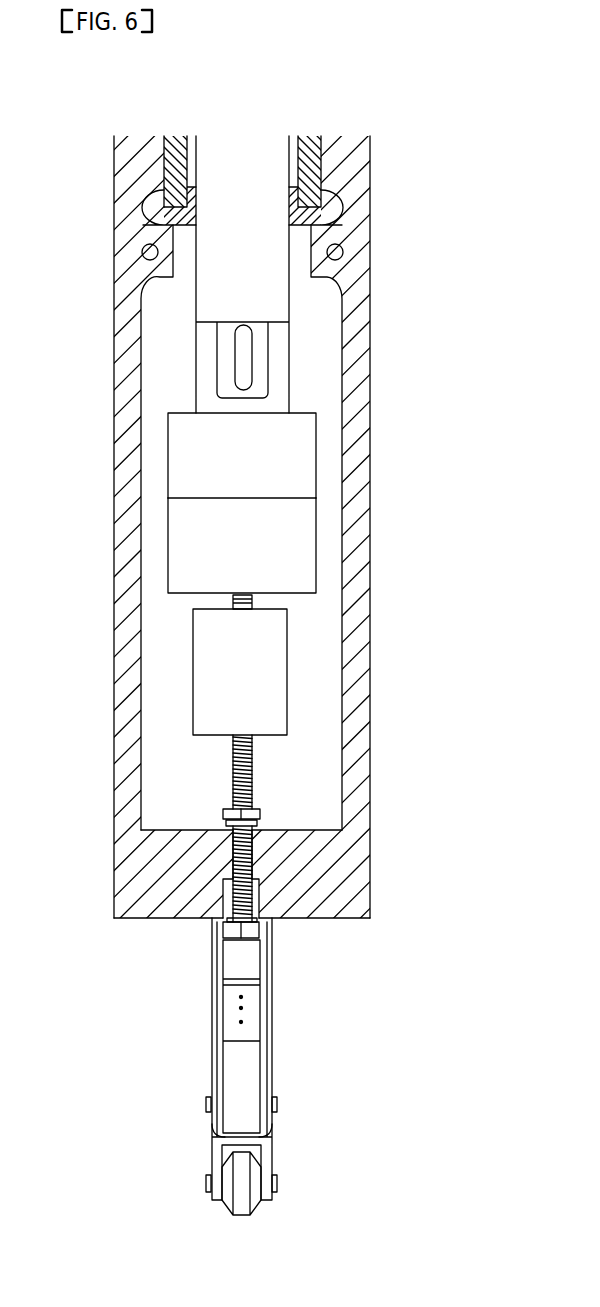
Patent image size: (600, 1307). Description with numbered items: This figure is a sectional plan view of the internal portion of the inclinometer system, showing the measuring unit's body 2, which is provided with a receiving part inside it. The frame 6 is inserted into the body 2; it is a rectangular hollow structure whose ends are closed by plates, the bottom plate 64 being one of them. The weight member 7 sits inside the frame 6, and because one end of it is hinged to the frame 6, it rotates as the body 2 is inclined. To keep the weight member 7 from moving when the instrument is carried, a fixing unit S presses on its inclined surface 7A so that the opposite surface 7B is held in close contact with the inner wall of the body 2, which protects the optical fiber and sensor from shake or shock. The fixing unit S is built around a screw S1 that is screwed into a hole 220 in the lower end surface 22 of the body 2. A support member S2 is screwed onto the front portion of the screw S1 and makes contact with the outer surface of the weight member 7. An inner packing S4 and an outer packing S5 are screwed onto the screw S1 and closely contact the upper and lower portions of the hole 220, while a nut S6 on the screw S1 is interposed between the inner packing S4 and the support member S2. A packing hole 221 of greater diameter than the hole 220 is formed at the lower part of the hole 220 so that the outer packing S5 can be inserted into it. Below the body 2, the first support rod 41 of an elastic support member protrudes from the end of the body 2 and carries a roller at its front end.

The body 2 is at (118, 368).
The lower end surface 22 is at (132, 866).
The frame 6 is at (185, 232).
The bottom plate 64 is at (313, 210).
The weight member 7 is at (270, 468).
The inclined surface 7A is at (242, 537).
The opposite surface 7B is at (167, 468).
The fixing unit S is at (293, 683).
The screw S1 is at (252, 765).
The support member S2 is at (265, 632).
The inner packing S4 is at (258, 825).
The outer packing S5 is at (272, 918).
The nut S6 is at (260, 812).
The hole 220 is at (212, 879).
The packing hole 221 is at (252, 886).
The first support rod 41 is at (267, 1068).